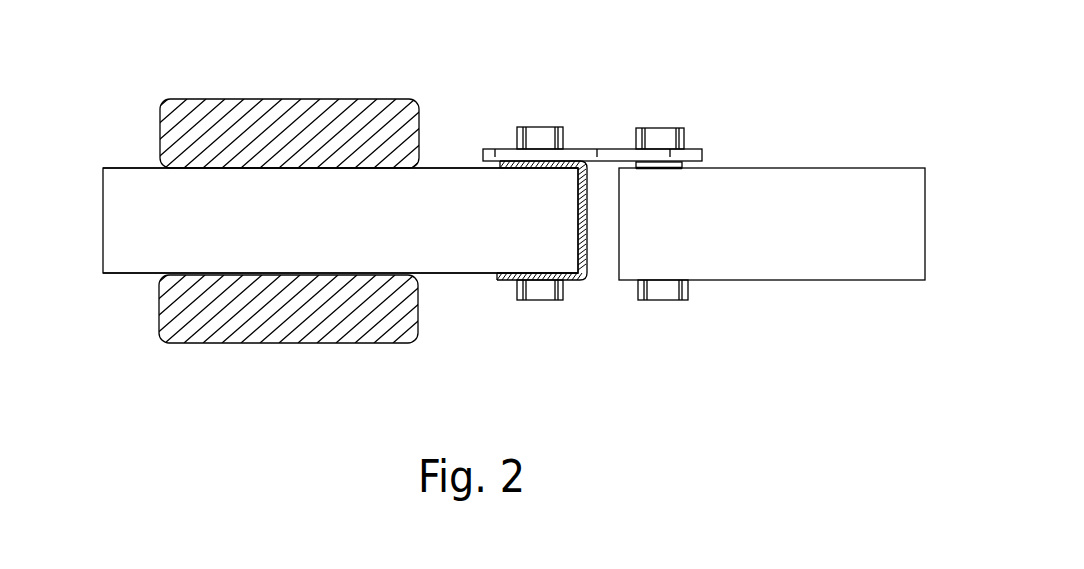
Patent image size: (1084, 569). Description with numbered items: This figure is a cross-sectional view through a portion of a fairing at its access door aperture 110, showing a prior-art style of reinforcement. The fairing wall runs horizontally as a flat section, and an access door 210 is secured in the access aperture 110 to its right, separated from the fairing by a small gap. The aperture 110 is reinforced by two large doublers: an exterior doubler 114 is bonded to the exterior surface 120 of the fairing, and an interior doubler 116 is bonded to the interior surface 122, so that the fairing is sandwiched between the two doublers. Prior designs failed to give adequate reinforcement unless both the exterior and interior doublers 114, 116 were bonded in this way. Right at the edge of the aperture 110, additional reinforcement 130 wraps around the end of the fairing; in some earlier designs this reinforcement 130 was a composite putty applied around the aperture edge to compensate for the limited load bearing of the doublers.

The access door aperture 110 is at (607, 272).
The exterior doubler 114 is at (315, 100).
The interior doubler 116 is at (298, 343).
The exterior surface 120 is at (141, 150).
The interior surface 122 is at (131, 294).
The additional reinforcement 130 is at (580, 282).
The access door 210 is at (763, 168).